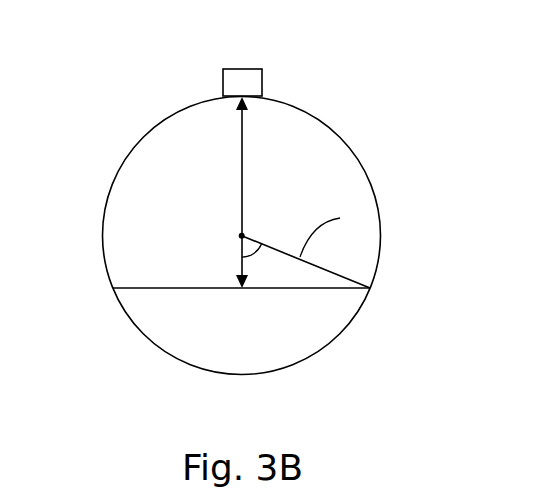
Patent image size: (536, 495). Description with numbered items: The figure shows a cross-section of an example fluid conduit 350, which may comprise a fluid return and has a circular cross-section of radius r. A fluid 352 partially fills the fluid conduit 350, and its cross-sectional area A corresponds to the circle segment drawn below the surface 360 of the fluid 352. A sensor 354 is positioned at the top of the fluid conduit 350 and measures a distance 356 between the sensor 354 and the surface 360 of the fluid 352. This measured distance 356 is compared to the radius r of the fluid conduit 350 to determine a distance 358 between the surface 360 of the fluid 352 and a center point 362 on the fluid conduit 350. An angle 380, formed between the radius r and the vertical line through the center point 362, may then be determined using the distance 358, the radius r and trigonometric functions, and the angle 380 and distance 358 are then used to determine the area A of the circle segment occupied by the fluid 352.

The fluid conduit 350 is at (142, 135).
The fluid 352 is at (168, 312).
The sensor 354 is at (222, 80).
The measured distance 356 is at (244, 156).
The distance 358 is at (240, 265).
The surface 360 is at (130, 288).
The center point 362 is at (240, 236).
The angle 380 is at (250, 237).